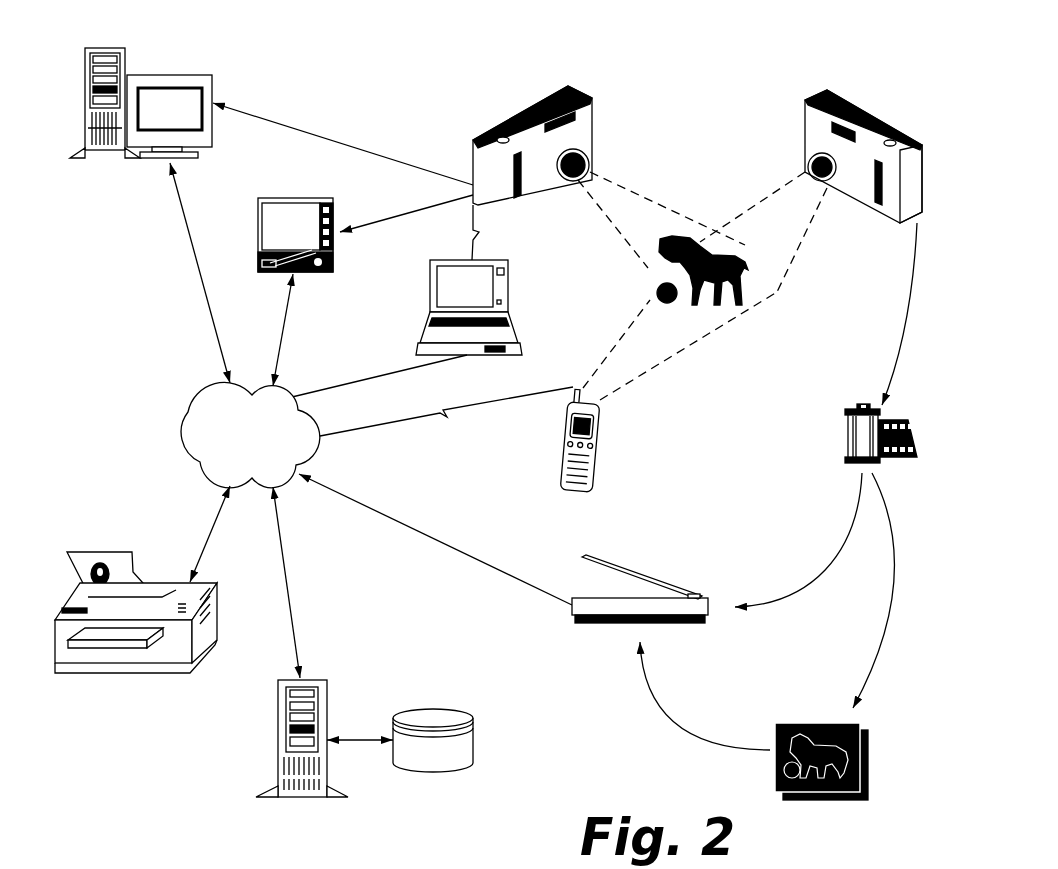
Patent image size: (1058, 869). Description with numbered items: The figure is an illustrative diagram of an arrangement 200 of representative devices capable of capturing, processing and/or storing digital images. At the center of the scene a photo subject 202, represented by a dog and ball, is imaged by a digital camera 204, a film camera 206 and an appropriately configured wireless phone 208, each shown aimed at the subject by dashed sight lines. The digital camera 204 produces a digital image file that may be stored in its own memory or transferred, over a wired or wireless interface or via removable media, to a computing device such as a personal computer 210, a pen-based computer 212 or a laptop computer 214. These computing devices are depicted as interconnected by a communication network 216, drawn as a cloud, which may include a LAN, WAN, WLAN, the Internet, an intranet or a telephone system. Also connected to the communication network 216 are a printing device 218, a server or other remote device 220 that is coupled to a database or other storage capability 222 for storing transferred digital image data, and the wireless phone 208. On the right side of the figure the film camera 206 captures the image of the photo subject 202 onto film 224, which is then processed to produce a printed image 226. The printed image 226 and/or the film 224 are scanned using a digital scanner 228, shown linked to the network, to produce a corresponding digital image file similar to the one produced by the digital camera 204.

The arrangement 200 is at (450, 35).
The photo subject 202 is at (770, 303).
The digital camera 204 is at (525, 193).
The film camera 206 is at (805, 120).
The wireless phone 208 is at (593, 487).
The personal computer 210 is at (198, 152).
The pen-based computer 212 is at (325, 272).
The laptop computer 214 is at (503, 355).
The communication network 216 is at (188, 412).
The printing device 218 is at (157, 672).
The remote device 220 is at (325, 797).
The database 222 is at (472, 762).
The film 224 is at (887, 465).
The printed image 226 is at (823, 807).
The digital scanner 228 is at (693, 623).